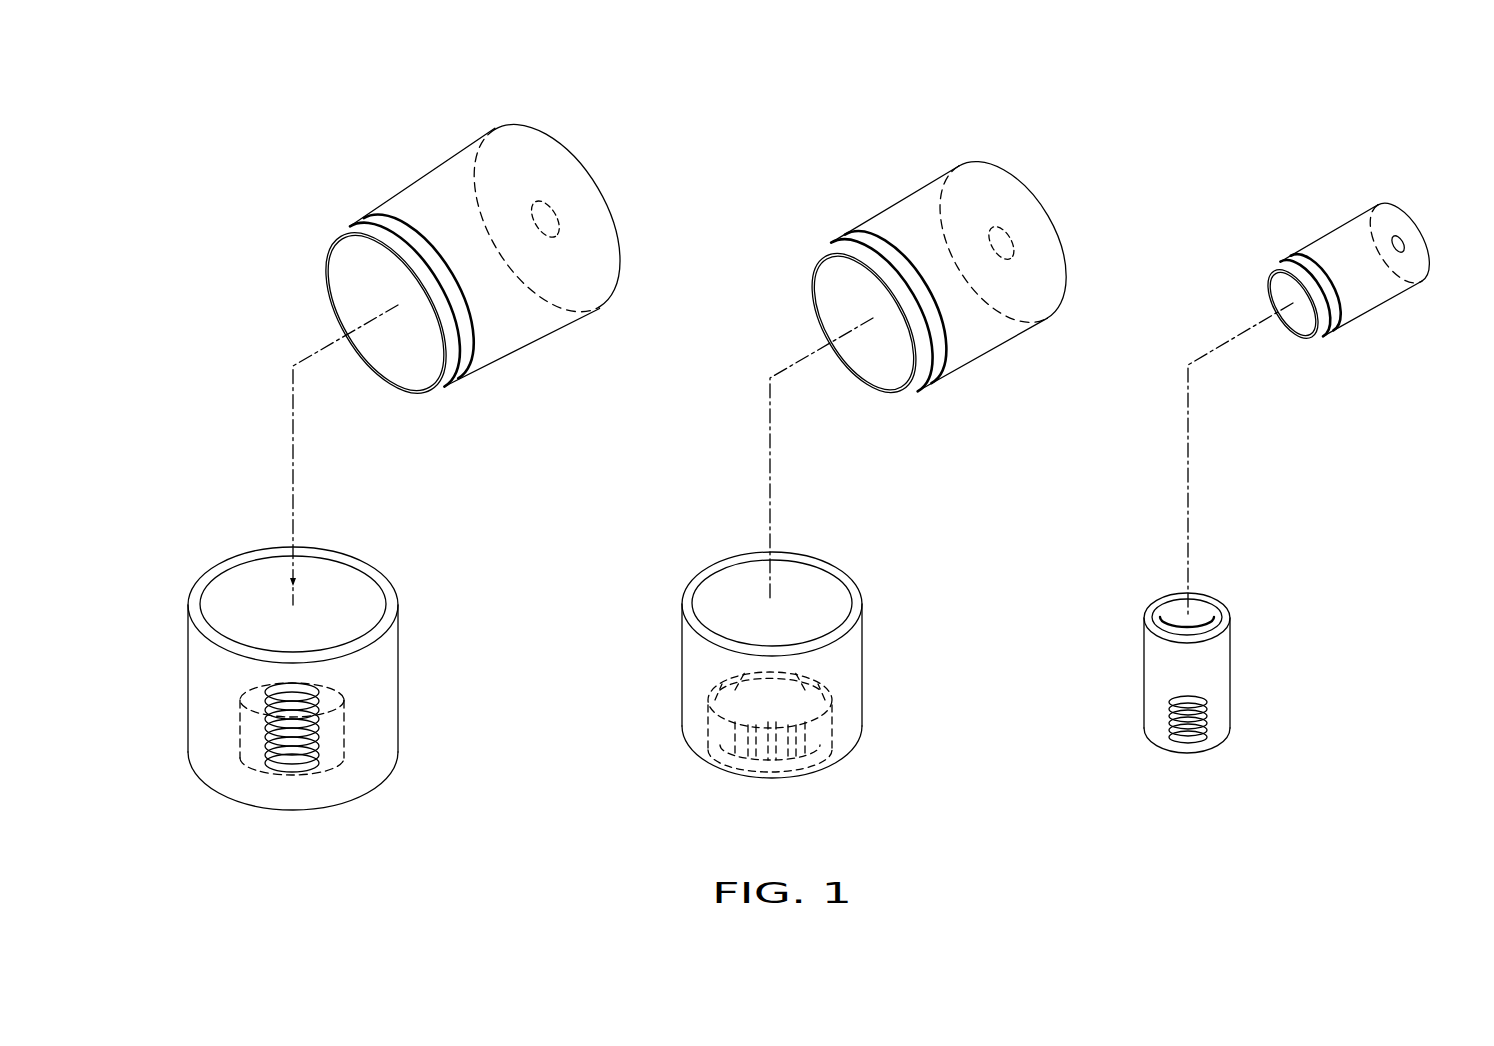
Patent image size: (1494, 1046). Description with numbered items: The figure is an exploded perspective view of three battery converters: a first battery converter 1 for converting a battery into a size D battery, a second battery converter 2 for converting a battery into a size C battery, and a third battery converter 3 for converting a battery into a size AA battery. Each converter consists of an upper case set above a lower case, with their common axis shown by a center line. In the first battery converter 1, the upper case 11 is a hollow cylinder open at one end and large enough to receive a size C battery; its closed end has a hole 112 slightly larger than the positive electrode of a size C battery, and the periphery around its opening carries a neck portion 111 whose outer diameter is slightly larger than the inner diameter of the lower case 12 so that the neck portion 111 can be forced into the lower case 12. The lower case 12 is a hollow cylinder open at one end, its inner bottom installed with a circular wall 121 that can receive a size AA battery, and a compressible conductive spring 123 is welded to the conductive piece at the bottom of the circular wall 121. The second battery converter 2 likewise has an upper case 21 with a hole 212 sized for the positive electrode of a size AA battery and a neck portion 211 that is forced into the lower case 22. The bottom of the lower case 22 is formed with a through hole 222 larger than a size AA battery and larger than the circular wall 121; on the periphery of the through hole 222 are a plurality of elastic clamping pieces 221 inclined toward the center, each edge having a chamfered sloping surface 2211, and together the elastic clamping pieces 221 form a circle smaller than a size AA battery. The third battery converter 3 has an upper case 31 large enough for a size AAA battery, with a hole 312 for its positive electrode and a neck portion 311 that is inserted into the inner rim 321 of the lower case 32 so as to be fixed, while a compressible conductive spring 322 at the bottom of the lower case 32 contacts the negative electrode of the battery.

The first battery converter 1 is at (290, 332).
The upper case 11 is at (443, 185).
The neck portion 111 is at (390, 232).
The hole 112 is at (551, 218).
The lower case 12 is at (373, 758).
The circular wall 121 is at (262, 741).
The conductive spring 123 is at (317, 698).
The second battery converter 2 is at (878, 197).
The upper case 21 is at (927, 200).
The neck portion 211 is at (930, 358).
The hole 212 is at (1005, 232).
The lower case 22 is at (845, 672).
The elastic clamping pieces 221 is at (820, 740).
The chamfered sloping surface 2211 is at (770, 747).
The through hole 222 is at (703, 728).
The third battery converter 3 is at (1293, 247).
The upper case 31 is at (1332, 242).
The neck portion 311 is at (1335, 335).
The hole 312 is at (1400, 240).
The lower case 32 is at (1223, 670).
The inner rim 321 is at (1227, 612).
The conductive spring 322 is at (1205, 732).